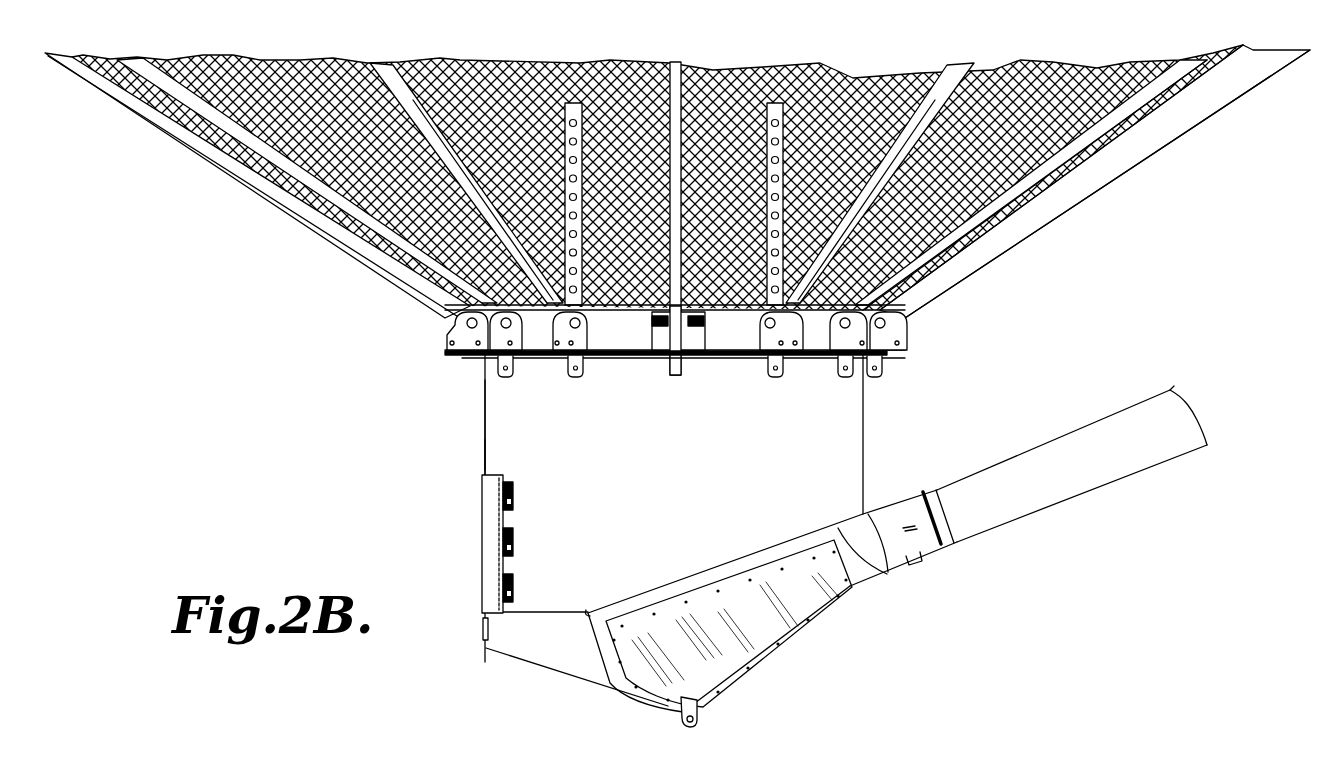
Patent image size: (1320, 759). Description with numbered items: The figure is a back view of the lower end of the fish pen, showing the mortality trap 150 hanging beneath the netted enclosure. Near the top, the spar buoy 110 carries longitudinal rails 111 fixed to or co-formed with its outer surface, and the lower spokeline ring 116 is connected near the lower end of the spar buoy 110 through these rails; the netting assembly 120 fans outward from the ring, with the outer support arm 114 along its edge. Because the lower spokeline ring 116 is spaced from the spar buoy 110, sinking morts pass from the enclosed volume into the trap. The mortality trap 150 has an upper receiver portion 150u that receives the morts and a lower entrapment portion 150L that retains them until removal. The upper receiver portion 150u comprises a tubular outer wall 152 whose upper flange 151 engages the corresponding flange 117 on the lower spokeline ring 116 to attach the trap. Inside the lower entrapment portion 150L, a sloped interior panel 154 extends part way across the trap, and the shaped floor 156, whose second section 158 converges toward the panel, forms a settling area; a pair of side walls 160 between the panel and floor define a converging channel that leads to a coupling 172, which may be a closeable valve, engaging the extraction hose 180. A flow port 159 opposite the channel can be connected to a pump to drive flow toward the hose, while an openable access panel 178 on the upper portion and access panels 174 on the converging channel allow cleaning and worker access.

The spar buoy 110 is at (775, 84).
The longitudinal rails 111 is at (783, 150).
The outer support arm 114 is at (1088, 192).
The lower spokeline ring 116 is at (920, 342).
The flange 117 is at (455, 328).
The netting assembly 120 is at (1180, 103).
The mortality trap 150 is at (452, 440).
The upper receiver portion 150u is at (482, 458).
The lower entrapment portion 150L is at (475, 654).
The upper flange 151 is at (478, 358).
The tubular outer wall 152 is at (497, 406).
The sloped interior panel 154 is at (880, 571).
The shaped floor 156 is at (650, 707).
The second section of the floor 158 is at (829, 608).
The flow port 159 is at (478, 624).
The side walls 160 is at (868, 538).
The coupling 172 is at (945, 545).
The access panels 174 is at (762, 640).
The openable access panel 178 is at (476, 545).
The extraction hose 180 is at (1065, 436).